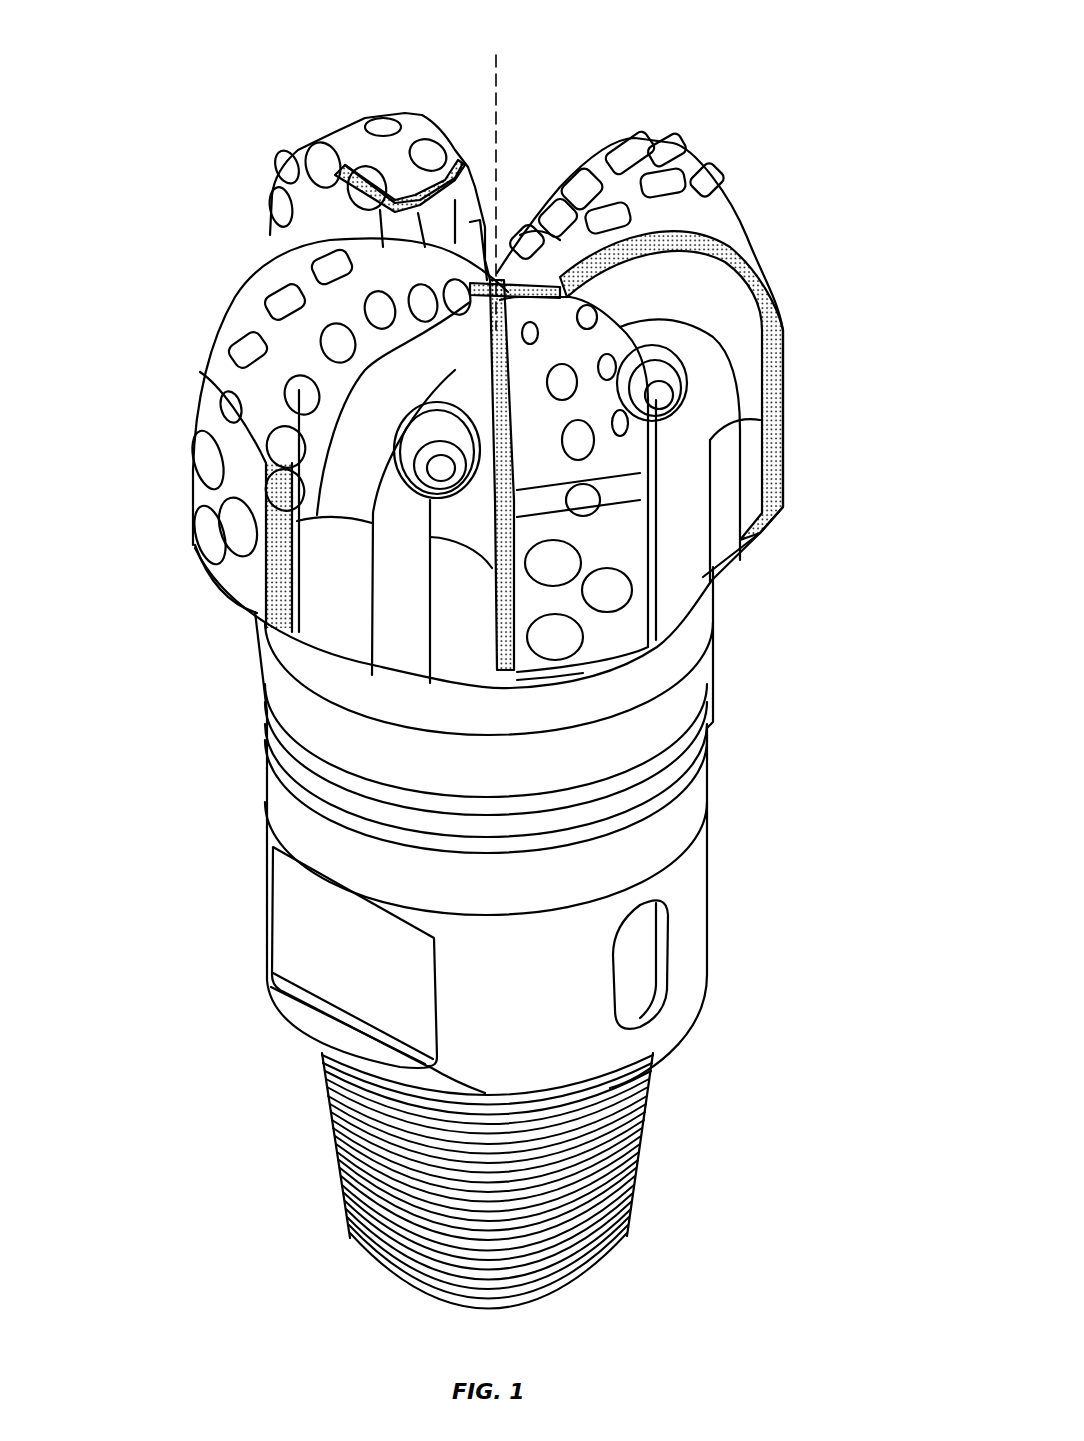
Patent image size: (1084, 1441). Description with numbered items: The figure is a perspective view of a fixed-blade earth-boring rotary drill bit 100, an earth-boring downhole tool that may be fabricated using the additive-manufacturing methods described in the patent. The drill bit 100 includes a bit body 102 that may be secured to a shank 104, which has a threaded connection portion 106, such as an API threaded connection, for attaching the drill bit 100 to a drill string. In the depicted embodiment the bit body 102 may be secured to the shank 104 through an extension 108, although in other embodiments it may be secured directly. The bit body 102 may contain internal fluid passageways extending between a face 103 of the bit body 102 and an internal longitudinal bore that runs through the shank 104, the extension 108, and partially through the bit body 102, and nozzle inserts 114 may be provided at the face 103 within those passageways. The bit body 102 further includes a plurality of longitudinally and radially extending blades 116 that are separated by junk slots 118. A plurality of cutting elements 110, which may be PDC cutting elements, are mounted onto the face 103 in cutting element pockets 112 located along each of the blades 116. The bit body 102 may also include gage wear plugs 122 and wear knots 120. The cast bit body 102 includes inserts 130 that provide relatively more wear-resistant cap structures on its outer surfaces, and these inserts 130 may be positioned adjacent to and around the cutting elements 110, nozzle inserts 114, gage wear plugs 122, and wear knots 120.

The fixed-blade earth-boring rotary drill bit 100 is at (800, 76).
The bit body 102 is at (678, 302).
The face of the bit body 103 is at (700, 218).
The shank 104 is at (693, 912).
The threaded connection portion 106 is at (637, 1166).
The extension 108 is at (693, 738).
The cutting elements 110 is at (283, 165).
The cutting element pockets 112 is at (272, 207).
The nozzle inserts 114 is at (395, 492).
The blades 116 is at (408, 108).
The junk slots 118 is at (522, 170).
The wear knots 120 is at (228, 407).
The gage wear plugs 122 is at (208, 540).
The inserts 130 is at (146, 544).